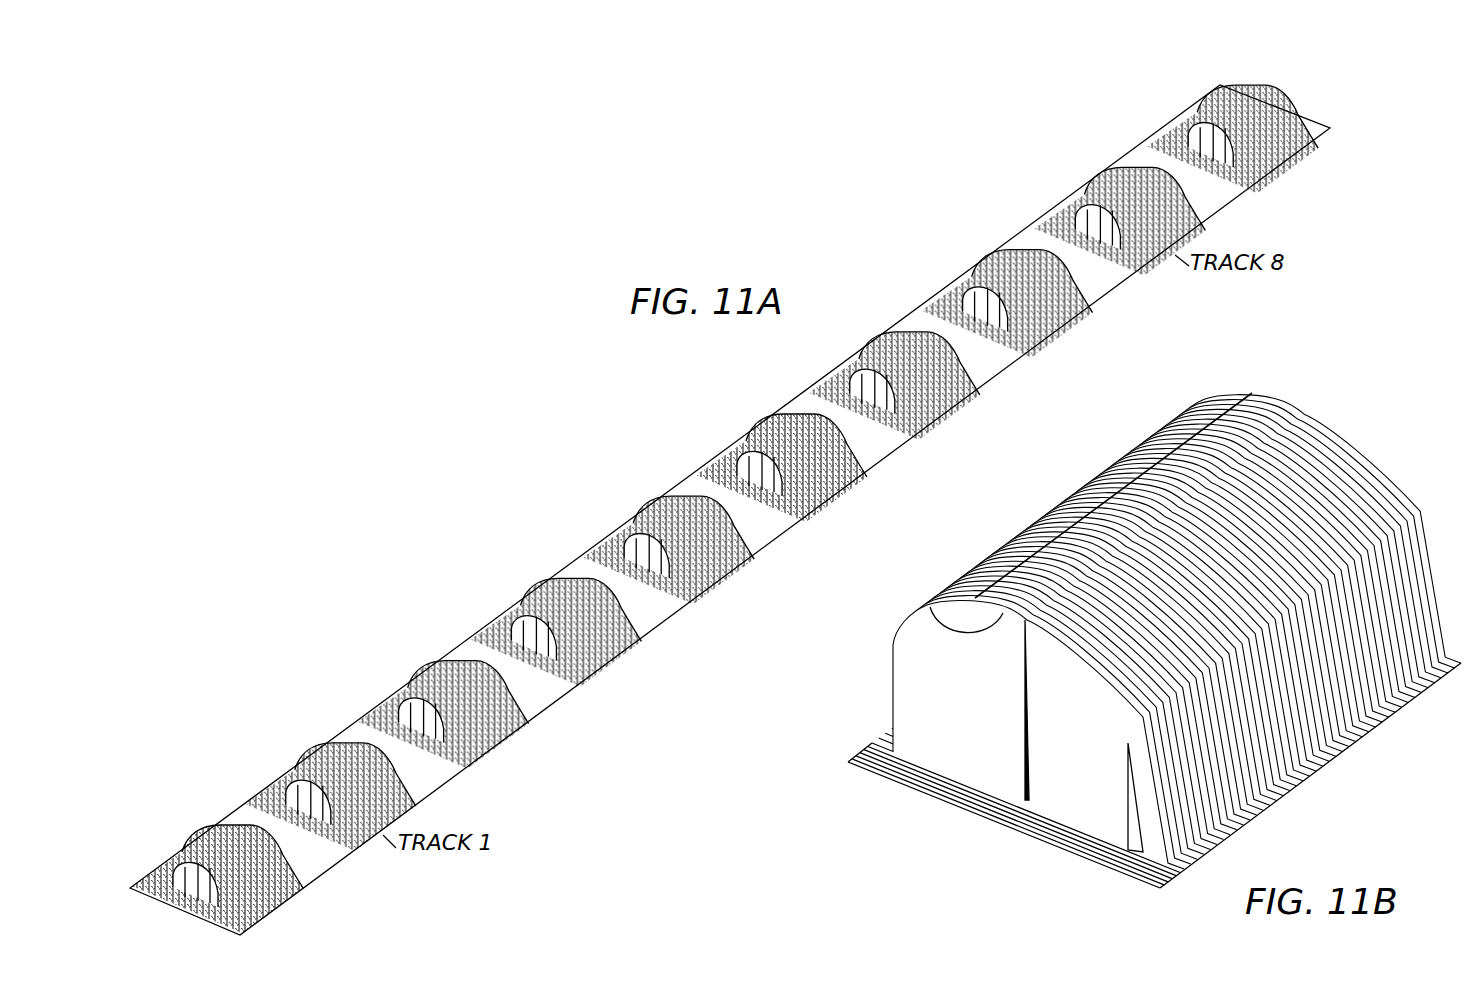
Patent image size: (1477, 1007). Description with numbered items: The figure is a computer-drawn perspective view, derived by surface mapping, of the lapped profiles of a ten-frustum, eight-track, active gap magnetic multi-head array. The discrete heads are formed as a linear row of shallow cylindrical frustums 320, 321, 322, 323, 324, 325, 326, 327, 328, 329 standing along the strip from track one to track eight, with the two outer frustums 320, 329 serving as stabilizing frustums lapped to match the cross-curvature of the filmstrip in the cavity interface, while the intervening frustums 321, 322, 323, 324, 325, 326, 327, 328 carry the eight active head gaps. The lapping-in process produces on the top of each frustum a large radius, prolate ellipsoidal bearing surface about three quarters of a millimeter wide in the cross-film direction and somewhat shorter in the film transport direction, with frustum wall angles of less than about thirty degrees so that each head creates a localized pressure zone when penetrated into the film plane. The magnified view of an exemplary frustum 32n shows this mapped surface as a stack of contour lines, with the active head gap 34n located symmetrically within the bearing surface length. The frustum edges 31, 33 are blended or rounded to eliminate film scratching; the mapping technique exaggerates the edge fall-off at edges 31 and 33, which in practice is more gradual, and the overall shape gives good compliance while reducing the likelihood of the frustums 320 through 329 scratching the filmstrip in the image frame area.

In FIG. 11A, the frustum 320 is at (203, 839).
In FIG. 11A, the frustum 321 is at (283, 778).
In FIG. 11A, the frustum 322 is at (445, 668).
In FIG. 11A, the frustum 323 is at (548, 578).
In FIG. 11A, the frustum 324 is at (657, 497).
In FIG. 11A, the frustum 325 is at (757, 418).
In FIG. 11A, the frustum 326 is at (867, 345).
In FIG. 11A, the frustum 327 is at (985, 260).
In FIG. 11A, the frustum 328 is at (1097, 175).
In FIG. 11A, the frustum 329 is at (1203, 100).
In FIG. 11B, the frustum 32n is at (1324, 787).
In FIG. 11B, the frustum edge 31 is at (928, 600).
In FIG. 11B, the frustum edge 33 is at (1275, 427).
In FIG. 11B, the active head gap 34n is at (1003, 706).